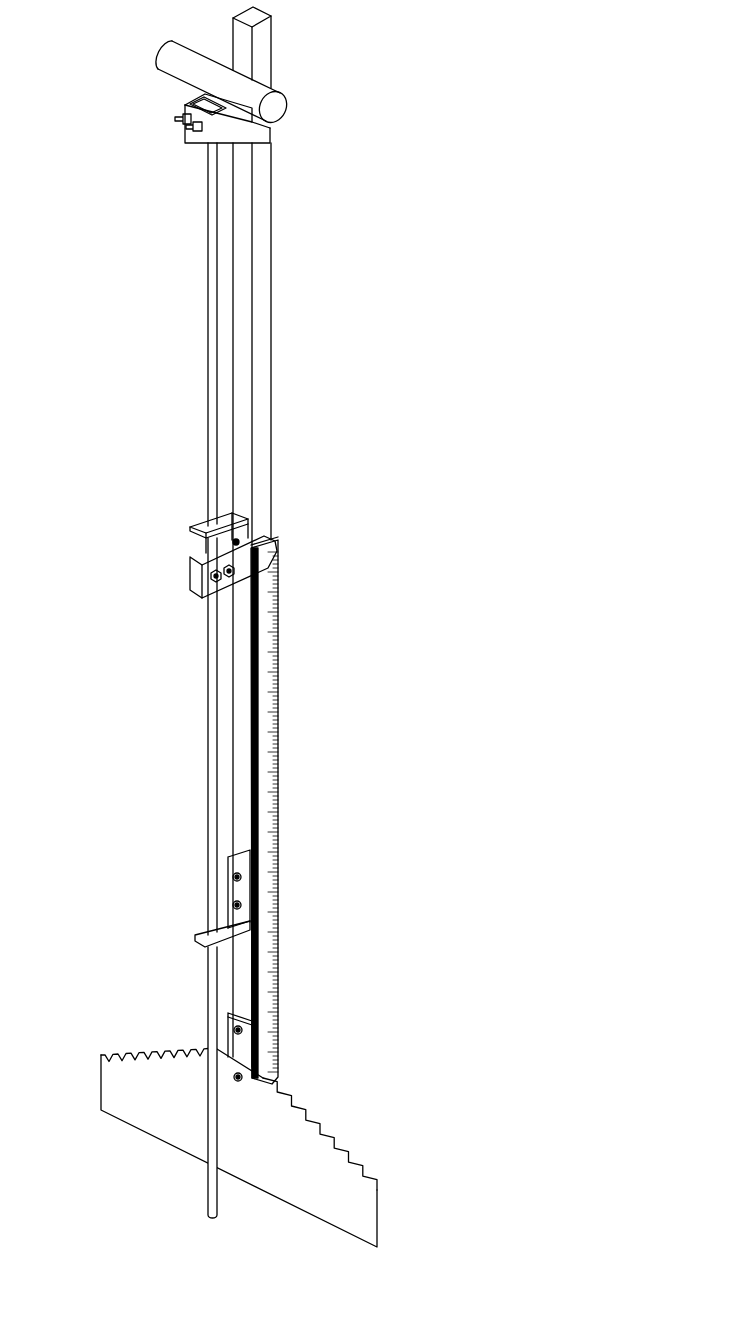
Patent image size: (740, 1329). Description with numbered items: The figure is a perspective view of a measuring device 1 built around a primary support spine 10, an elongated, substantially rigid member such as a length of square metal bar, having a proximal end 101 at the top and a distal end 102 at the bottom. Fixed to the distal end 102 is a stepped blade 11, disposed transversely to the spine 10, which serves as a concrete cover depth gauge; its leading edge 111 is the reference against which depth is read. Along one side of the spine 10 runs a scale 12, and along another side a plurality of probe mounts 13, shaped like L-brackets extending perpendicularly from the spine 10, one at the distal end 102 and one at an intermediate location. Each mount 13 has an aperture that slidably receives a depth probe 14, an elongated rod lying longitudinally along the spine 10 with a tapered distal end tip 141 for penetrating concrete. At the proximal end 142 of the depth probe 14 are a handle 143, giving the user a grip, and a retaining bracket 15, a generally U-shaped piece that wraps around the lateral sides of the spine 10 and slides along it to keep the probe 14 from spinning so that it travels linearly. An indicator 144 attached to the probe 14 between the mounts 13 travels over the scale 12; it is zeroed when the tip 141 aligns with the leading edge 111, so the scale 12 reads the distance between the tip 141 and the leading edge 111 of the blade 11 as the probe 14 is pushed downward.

The measuring device 1 is at (445, 290).
The primary support spine 10 is at (262, 313).
The proximal end 101 is at (333, 103).
The distal end 102 is at (324, 1019).
The stepped blade 11 is at (239, 1148).
The leading edge 111 is at (266, 1193).
The scale 12 is at (272, 619).
The probe mount 13 is at (195, 528).
The depth probe 14 is at (212, 712).
The distal end tip 141 is at (213, 1137).
The proximal end 142 is at (213, 158).
The handle 143 is at (176, 58).
The indicator 144 is at (207, 589).
The retaining bracket 15 is at (222, 130).